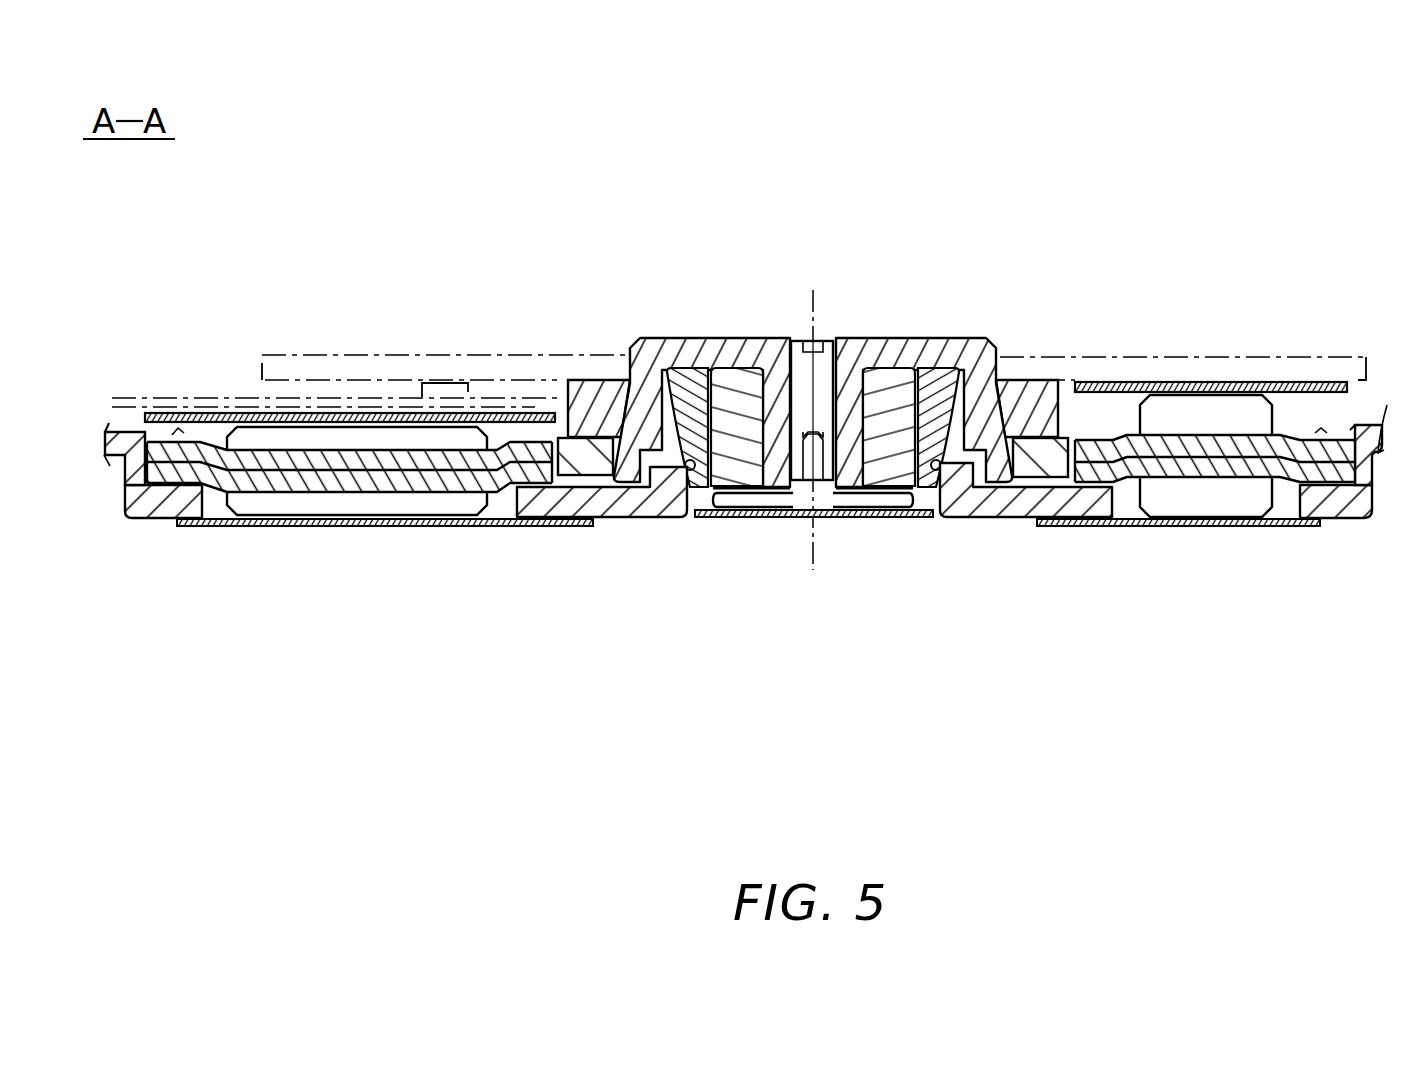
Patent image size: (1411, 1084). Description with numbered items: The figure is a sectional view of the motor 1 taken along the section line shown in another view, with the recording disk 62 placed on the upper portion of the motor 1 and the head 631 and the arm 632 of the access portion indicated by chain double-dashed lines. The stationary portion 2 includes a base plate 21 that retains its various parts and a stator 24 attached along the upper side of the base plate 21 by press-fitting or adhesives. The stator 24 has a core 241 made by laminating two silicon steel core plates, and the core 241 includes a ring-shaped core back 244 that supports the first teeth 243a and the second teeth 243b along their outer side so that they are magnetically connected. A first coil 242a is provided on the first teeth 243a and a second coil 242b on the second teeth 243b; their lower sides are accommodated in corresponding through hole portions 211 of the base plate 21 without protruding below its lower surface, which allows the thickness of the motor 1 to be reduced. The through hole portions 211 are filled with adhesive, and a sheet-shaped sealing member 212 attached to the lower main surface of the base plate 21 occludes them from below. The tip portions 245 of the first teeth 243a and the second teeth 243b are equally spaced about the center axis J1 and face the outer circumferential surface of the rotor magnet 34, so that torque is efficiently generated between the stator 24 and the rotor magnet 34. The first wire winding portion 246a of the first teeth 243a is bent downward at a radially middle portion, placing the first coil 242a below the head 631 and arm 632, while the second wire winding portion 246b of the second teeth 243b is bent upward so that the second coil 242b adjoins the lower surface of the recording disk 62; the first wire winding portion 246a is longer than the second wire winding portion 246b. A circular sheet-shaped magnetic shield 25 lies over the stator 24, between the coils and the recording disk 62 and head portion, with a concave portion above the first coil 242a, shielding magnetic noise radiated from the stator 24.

The motor 1 is at (828, 187).
The stationary portion 2 is at (418, 785).
The base plate 21 is at (600, 519).
The through hole portions 211 is at (213, 512).
The sealing member 212 is at (532, 527).
The stator 24 is at (360, 728).
The core 241 is at (295, 615).
The first coil 242a is at (458, 503).
The second coil 242b is at (1185, 503).
The first teeth 243a is at (356, 470).
The second teeth 243b is at (1232, 467).
The core back 244 is at (193, 525).
The tip portions 245 is at (530, 453).
The first wire winding portion 246a is at (353, 460).
The second wire winding portion 246b is at (1193, 447).
The magnetic shield 25 is at (1270, 393).
The rotor magnet 34 is at (1043, 443).
The recording disk 62 is at (367, 357).
The head 631 is at (470, 390).
The arm 632 is at (400, 397).
The center axis J1 is at (810, 305).